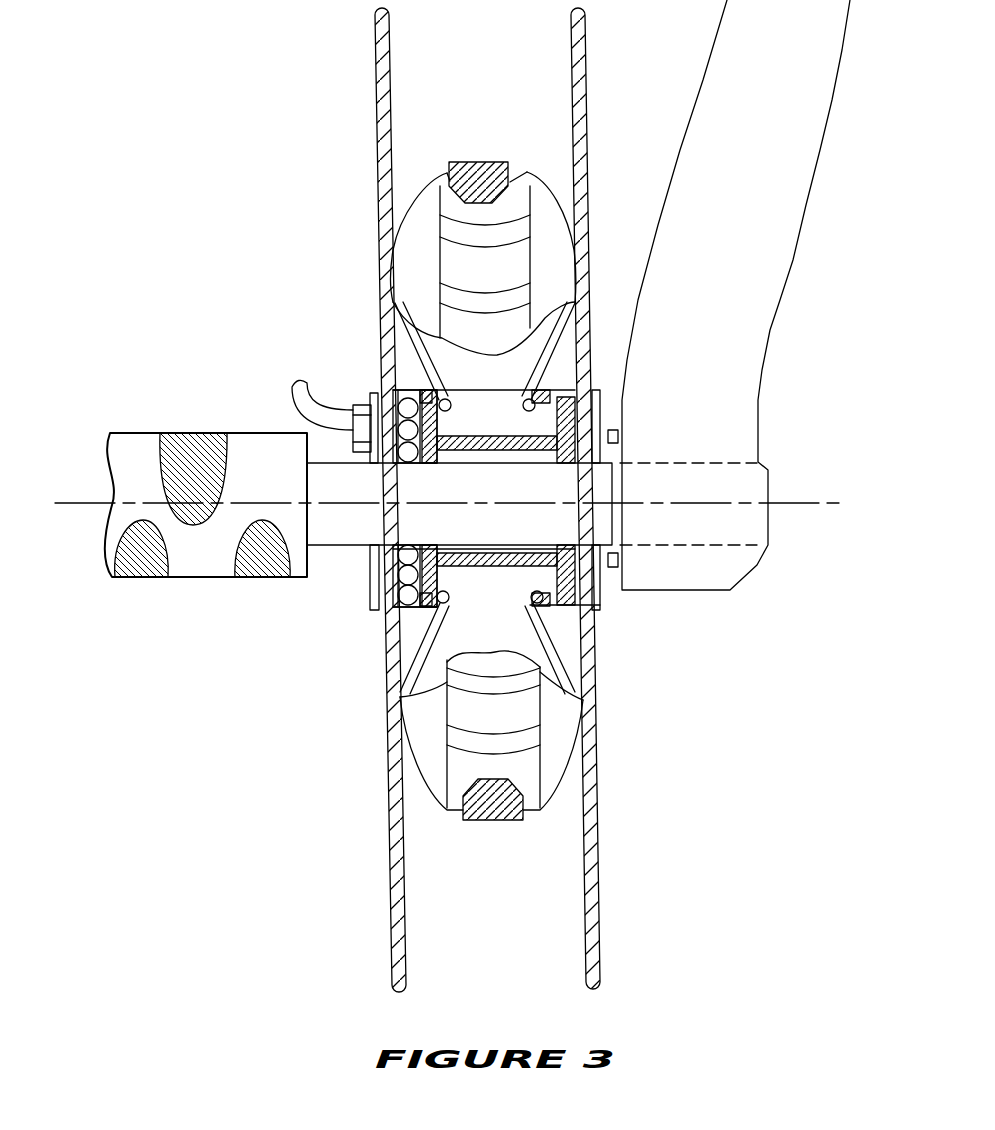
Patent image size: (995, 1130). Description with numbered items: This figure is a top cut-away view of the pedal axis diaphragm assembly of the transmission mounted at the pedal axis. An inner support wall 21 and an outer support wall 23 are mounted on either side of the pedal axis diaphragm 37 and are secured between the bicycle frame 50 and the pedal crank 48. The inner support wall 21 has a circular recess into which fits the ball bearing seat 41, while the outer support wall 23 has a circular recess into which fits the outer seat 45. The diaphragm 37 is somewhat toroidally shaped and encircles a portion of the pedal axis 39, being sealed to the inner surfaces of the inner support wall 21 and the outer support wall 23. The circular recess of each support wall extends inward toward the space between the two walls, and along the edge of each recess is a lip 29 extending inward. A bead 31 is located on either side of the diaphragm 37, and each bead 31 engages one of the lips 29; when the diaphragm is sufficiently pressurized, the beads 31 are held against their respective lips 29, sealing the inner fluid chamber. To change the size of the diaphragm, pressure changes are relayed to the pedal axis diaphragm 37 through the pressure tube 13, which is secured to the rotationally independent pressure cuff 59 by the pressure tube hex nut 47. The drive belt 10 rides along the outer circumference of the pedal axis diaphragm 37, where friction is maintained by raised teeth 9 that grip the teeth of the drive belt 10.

The raised teeth 9 is at (487, 745).
The drive belt 10 is at (493, 890).
The pressure tube 13 is at (295, 384).
The inner support wall 21 is at (392, 892).
The outer support wall 23 is at (600, 910).
The lip 29 is at (537, 616).
The bead 31 is at (535, 596).
The pedal axis diaphragm 37 is at (548, 185).
The pedal axis 39 is at (813, 497).
The ball bearing seat 41 is at (386, 603).
The outer seat 45 is at (576, 585).
The pressure tube hex nut 47 is at (359, 402).
The pedal crank 48 is at (765, 380).
The bicycle frame 50 is at (190, 562).
The pressure cuff 59 is at (371, 548).